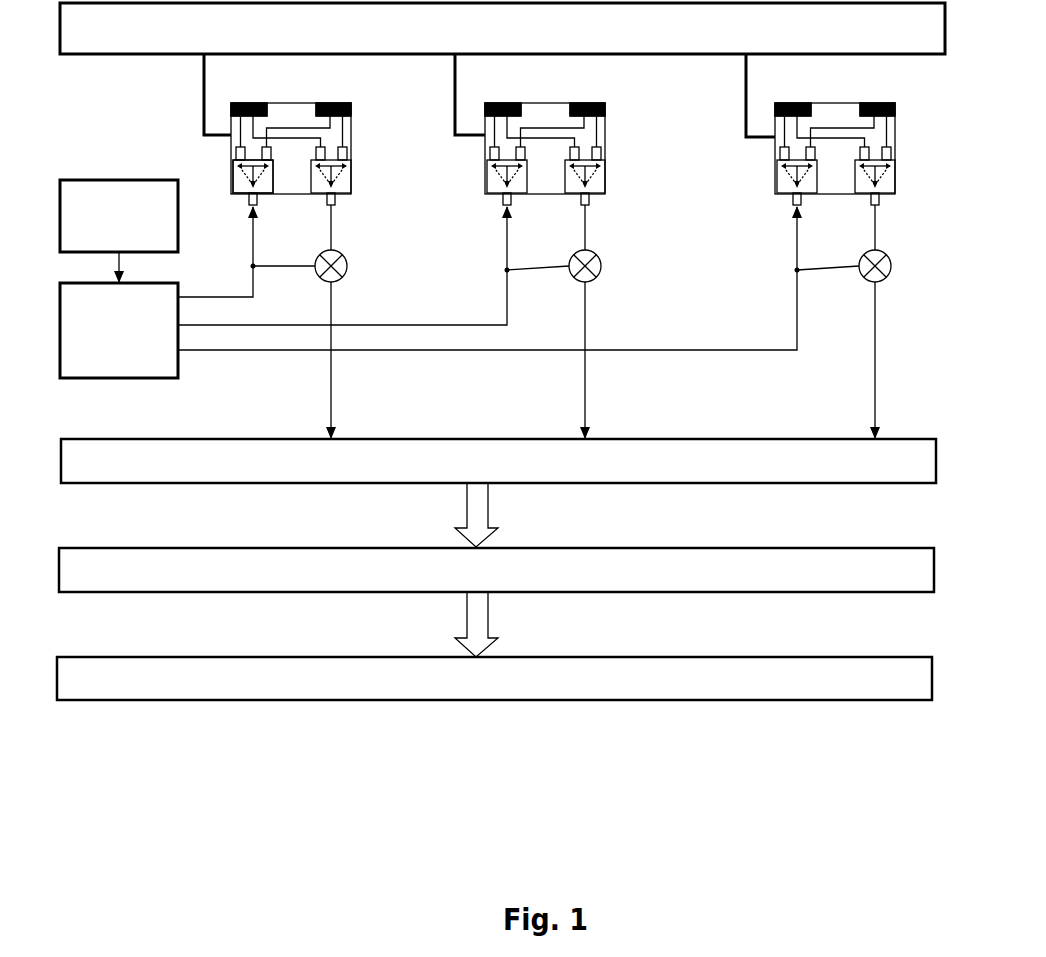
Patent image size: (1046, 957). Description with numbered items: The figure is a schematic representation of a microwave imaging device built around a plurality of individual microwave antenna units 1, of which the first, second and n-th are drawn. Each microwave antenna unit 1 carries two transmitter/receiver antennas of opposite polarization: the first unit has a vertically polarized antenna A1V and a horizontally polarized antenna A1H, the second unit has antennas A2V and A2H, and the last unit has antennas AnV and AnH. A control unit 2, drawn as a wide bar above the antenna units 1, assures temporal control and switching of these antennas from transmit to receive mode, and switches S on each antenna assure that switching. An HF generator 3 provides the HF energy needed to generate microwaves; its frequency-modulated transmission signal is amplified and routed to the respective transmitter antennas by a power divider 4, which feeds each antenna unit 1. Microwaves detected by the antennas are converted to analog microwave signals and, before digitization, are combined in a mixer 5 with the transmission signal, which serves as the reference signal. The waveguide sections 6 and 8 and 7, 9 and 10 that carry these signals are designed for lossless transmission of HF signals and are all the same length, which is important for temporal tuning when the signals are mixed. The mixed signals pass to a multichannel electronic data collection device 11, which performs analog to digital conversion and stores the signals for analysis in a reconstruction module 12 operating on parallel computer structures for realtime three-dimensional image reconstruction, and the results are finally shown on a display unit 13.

The microwave antenna unit 1 is at (762, 118).
The control unit 2 is at (502, 70).
The HF generator 3 is at (119, 216).
The power divider 4 is at (119, 315).
The mixer 5 is at (542, 321).
The waveguide section 6 is at (215, 282).
The waveguide section 7 is at (245, 238).
The waveguide section 8 is at (284, 257).
The waveguide section 9 is at (340, 227).
The waveguide section 10 is at (346, 360).
The multichannel electronic data collection device 11 is at (498, 461).
The reconstruction module 12 is at (496, 537).
The display unit 13 is at (494, 646).
The vertically polarized antenna of the first antenna unit A1V is at (228, 110).
The horizontally polarized antenna of the first antenna unit A1H is at (346, 101).
The vertically polarized antenna of the second antenna unit A2V is at (498, 96).
The horizontally polarized antenna of the second antenna unit A2H is at (587, 96).
The vertically polarized antenna of the n-th antenna unit AnV is at (788, 95).
The horizontally polarized antenna of the n-th antenna unit AnH is at (878, 95).
The switch S is at (243, 176).